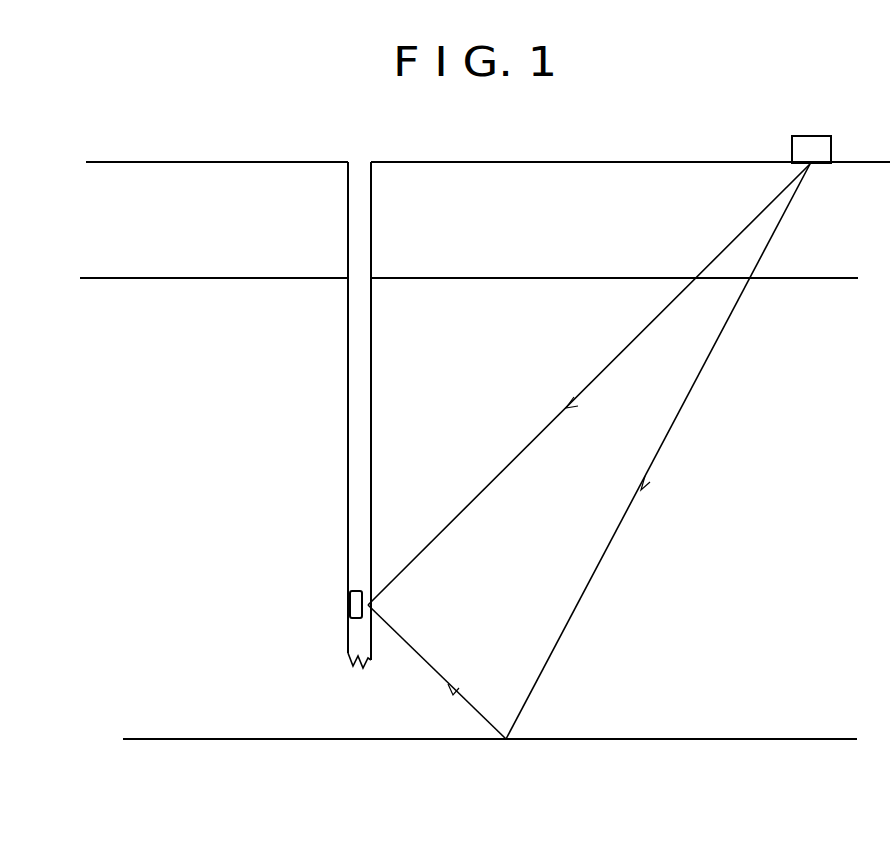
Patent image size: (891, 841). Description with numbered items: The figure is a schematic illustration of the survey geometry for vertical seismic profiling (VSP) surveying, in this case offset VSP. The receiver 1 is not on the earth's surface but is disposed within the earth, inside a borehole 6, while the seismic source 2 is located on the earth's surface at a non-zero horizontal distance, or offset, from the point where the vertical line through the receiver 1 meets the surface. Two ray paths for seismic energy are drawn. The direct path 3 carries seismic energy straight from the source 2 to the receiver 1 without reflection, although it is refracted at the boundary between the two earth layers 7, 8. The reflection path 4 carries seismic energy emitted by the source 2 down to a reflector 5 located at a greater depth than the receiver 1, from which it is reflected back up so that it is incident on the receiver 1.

The receiver 1 is at (350, 591).
The seismic source 2 is at (831, 145).
The direct path 3 is at (610, 372).
The reflection path 4 is at (677, 425).
The reflector 5 is at (779, 740).
The borehole 6 is at (360, 419).
The layer 7 is at (469, 248).
The layer 8 is at (138, 489).